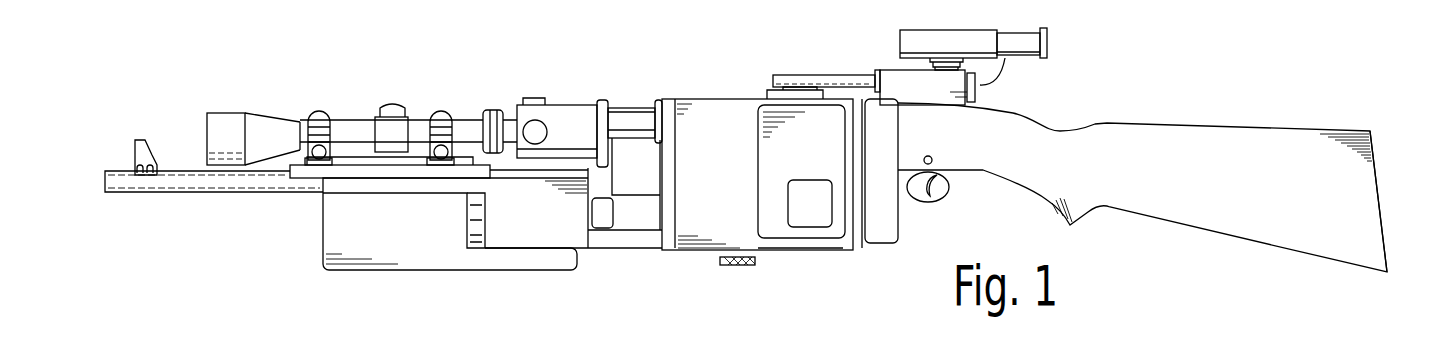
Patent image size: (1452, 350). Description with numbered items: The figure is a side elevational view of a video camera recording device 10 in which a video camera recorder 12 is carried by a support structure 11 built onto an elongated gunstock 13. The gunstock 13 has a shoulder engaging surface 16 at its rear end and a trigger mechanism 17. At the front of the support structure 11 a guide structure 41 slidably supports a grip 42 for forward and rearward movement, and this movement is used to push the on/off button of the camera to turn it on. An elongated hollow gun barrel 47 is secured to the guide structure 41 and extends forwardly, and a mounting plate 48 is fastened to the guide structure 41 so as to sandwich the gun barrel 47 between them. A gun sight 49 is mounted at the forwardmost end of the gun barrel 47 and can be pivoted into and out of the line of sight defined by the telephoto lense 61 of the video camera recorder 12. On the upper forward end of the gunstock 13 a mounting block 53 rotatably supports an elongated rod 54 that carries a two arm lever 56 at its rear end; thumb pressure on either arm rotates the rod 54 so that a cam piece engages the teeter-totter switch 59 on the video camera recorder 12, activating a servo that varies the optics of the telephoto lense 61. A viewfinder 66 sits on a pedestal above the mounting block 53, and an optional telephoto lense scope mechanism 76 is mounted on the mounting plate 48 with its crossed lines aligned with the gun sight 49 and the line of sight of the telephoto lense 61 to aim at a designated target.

The video camera recording device 10 is at (681, 260).
The support structure 11 is at (704, 257).
The video camera recorder 12 is at (777, 254).
The gunstock 13 is at (1141, 183).
The shoulder engaging surface 16 is at (1377, 172).
The trigger mechanism 17 is at (937, 187).
The guide structure 41 is at (547, 250).
The grip 42 is at (380, 279).
The gun barrel 47 is at (180, 180).
The mounting plate 48 is at (340, 172).
The gun sight 49 is at (133, 157).
The mounting block 53 is at (907, 90).
The elongated rod 54 is at (835, 77).
The two arm lever 56 is at (975, 95).
The teeter-totter switch 59 is at (759, 91).
The telephoto lense 61 is at (627, 120).
The viewfinder 66 is at (945, 38).
The telephoto lense scope mechanism 76 is at (362, 113).